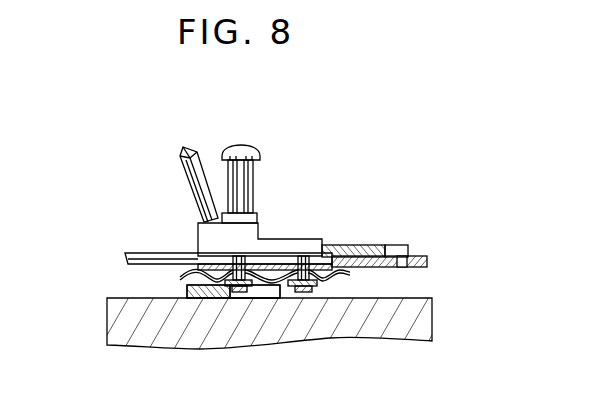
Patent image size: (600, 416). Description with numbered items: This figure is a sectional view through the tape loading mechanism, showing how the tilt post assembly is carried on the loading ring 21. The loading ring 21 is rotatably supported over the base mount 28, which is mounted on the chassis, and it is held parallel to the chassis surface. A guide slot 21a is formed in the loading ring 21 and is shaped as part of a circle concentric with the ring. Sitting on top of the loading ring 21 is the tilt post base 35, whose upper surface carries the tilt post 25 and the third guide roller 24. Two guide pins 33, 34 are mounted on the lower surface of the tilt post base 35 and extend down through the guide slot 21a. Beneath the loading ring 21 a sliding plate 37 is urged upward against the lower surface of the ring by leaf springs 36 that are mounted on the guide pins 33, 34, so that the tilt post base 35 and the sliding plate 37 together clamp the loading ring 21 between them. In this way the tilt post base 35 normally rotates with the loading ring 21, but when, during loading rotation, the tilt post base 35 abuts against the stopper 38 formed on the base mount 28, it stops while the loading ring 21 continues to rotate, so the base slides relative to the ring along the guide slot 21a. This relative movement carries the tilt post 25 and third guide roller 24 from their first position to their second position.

The loading ring 21 is at (422, 256).
The guide slot 21a is at (145, 253).
The third guide roller 24 is at (245, 143).
The tilt post 25 is at (186, 143).
The base mount 28 is at (110, 328).
The guide pin 33 is at (252, 299).
The guide pin 34 is at (302, 293).
The tilt post base 35 is at (283, 239).
The leaf spring 36 is at (327, 277).
The sliding plate 37 is at (197, 269).
The stopper 38 is at (270, 298).